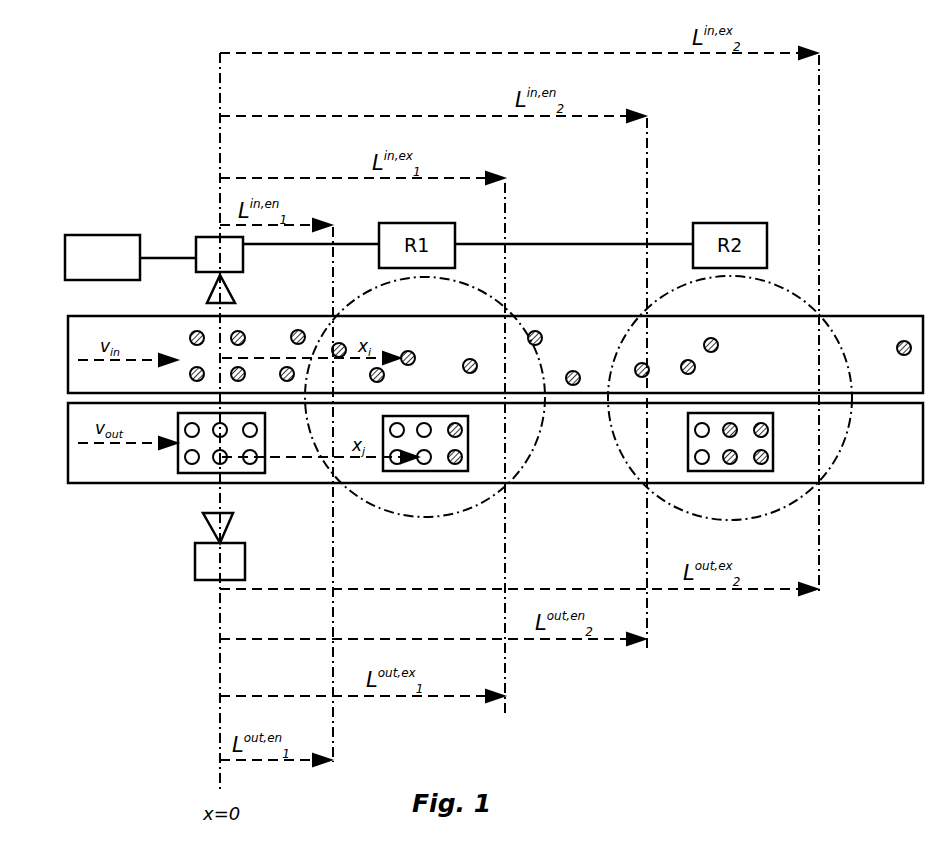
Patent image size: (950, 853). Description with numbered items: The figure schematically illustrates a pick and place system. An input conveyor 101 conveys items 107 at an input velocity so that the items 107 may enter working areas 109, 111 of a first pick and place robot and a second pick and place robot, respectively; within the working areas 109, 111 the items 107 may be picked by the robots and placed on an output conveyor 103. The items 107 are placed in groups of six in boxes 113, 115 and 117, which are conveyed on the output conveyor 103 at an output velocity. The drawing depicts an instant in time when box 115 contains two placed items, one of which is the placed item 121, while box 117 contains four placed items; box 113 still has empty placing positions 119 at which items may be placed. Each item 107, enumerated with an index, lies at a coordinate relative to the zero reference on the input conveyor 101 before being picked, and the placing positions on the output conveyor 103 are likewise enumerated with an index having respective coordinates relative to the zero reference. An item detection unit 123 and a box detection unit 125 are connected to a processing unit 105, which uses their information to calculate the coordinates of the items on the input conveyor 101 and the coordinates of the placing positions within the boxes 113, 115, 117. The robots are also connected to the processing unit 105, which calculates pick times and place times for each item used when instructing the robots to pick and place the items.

The input conveyor 101 is at (68, 334).
The output conveyor 103 is at (68, 426).
The processing unit 105 is at (88, 235).
The item 107 is at (198, 330).
The working area of robot R1 109 is at (490, 297).
The working area of robot R2 111 is at (797, 295).
The box 113 is at (182, 476).
The box 115 is at (405, 471).
The box 117 is at (752, 471).
The slot of container 119 is at (185, 462).
The placed item 121 is at (455, 471).
The item detection unit 123 is at (205, 237).
The box detection unit 125 is at (195, 565).